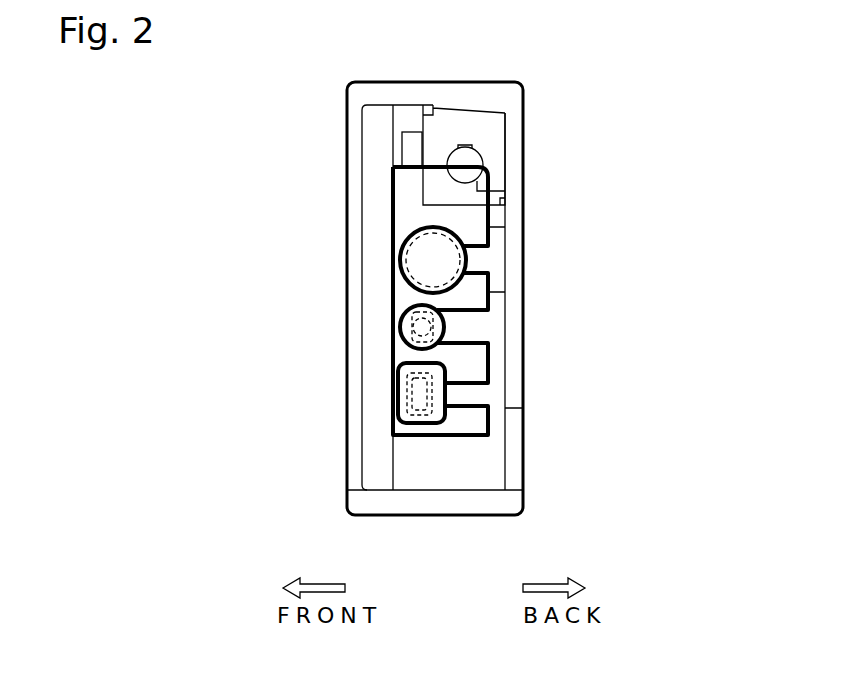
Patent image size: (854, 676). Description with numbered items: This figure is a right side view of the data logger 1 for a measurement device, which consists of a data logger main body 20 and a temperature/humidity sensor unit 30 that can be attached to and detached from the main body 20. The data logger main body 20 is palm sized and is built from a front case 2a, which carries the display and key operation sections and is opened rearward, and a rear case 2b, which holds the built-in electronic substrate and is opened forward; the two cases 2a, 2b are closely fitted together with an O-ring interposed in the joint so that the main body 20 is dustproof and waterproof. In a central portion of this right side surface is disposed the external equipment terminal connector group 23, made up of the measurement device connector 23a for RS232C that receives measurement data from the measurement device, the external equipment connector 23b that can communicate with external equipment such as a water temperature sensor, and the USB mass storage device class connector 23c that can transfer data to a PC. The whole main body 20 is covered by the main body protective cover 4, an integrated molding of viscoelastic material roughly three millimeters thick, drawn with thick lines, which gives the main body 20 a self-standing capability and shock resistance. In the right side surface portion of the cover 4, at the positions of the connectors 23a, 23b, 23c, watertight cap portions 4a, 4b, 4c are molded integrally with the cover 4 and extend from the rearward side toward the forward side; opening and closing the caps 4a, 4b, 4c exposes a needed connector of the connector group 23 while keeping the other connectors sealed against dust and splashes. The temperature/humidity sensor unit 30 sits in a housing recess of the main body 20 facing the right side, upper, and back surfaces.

The data logger 1 is at (602, 107).
The front case 2a is at (377, 118).
The rear case 2b is at (418, 118).
The main body protective cover 4 is at (527, 80).
The watertight cap portion 4a is at (400, 322).
The watertight cap portion 4b is at (400, 258).
The watertight cap portion 4c is at (398, 388).
The data logger main body 20 is at (460, 499).
The external equipment terminal connector group 23 is at (598, 243).
The measurement device connector 23a is at (437, 330).
The external equipment connector 23b is at (452, 264).
The USB mass storage device class connector 23c is at (433, 393).
The temperature/humidity sensor unit 30 is at (488, 150).